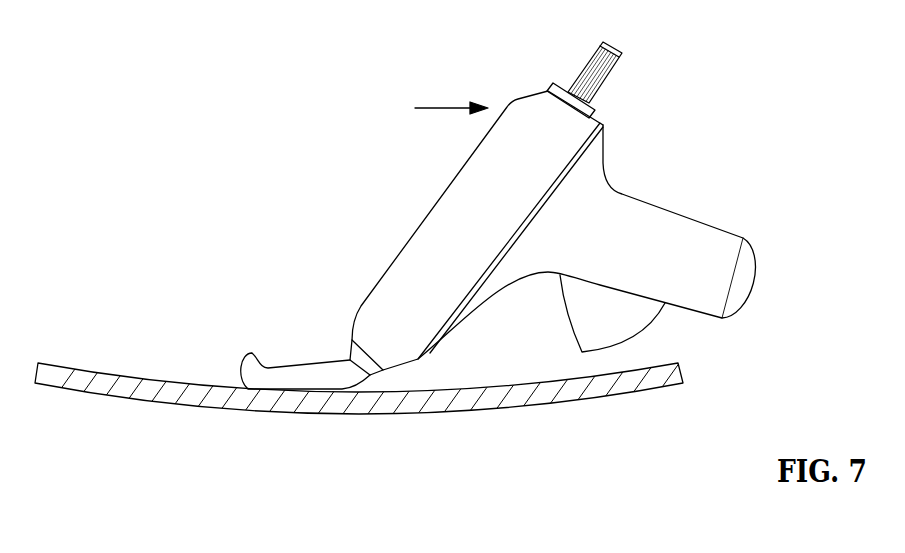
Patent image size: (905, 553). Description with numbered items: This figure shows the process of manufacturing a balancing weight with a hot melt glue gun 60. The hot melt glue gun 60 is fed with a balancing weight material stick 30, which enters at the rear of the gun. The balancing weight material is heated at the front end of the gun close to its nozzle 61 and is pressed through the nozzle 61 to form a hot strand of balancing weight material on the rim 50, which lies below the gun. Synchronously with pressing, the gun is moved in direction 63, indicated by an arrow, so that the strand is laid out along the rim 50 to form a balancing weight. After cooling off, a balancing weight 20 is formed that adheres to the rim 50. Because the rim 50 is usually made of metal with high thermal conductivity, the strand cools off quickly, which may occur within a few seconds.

The balancing weight 20 is at (277, 378).
The balancing weight material stick 30 is at (593, 62).
The rim 50 is at (381, 400).
The hot melt glue gun 60 is at (440, 233).
The nozzle 61 is at (360, 354).
The direction 63 is at (440, 107).